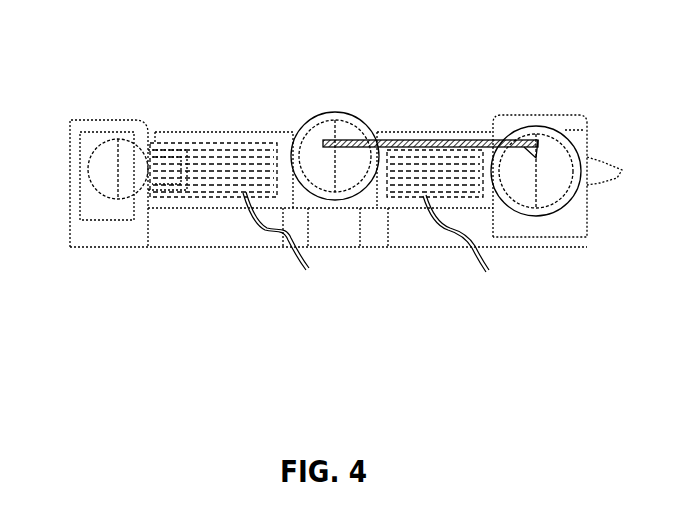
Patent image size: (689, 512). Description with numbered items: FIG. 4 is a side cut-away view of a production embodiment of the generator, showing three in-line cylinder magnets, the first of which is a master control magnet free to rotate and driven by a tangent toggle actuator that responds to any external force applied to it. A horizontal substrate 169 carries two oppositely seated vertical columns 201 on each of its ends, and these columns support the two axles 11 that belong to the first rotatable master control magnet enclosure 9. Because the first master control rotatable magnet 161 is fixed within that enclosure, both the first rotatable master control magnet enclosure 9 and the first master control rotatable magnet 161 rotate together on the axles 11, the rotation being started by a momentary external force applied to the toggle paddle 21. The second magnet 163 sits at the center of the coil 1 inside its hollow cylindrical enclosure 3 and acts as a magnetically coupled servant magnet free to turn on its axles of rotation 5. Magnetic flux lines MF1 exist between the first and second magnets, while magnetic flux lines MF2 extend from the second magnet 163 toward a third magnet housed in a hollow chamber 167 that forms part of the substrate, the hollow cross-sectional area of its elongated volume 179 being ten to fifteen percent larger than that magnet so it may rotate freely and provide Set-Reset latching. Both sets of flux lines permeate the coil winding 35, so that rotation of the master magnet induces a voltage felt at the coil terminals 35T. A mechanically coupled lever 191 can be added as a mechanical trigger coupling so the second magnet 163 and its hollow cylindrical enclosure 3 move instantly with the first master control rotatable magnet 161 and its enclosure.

The coil 1 is at (255, 130).
The hollow cylindrical enclosure 3 is at (340, 168).
The axles of rotation 5 is at (323, 138).
The first rotatable master control magnet enclosure 9 is at (522, 208).
The axles 11 is at (538, 162).
The toggle paddle 21 is at (617, 180).
The coil winding 35 is at (420, 172).
The coil terminals 35T is at (287, 212).
The first master control rotatable magnet 161 is at (568, 200).
The second magnet 163 is at (360, 205).
The hollow chamber 167 is at (97, 210).
The horizontal substrate 169 is at (224, 236).
The elongated volume 179 is at (108, 120).
The mechanically coupled lever 191 is at (392, 143).
The vertical columns 201 is at (512, 120).
The magnetic flux lines MF1 is at (447, 170).
The magnetic flux lines MF2 is at (200, 162).